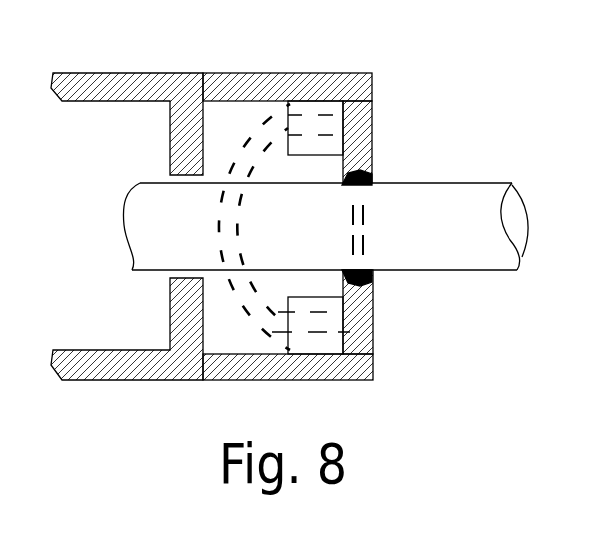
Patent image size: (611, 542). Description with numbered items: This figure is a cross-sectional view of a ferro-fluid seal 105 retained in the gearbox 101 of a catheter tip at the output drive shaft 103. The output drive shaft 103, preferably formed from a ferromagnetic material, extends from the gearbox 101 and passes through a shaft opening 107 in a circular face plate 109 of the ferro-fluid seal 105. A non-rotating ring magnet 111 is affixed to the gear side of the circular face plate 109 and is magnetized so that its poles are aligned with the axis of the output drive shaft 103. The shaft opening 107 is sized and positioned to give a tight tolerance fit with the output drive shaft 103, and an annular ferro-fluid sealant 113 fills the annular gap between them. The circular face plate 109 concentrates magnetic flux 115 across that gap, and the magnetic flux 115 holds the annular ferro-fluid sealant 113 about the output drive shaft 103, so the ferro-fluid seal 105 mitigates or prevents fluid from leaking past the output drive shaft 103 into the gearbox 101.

The gearbox 101 is at (118, 73).
The output drive shaft 103 is at (488, 185).
The ferro-fluid seal 105 is at (300, 73).
The shaft opening 107 is at (375, 177).
The circular face plate 109 is at (373, 333).
The ring magnet 111 is at (328, 297).
The annular ferro-fluid sealant 113 is at (357, 178).
The magnetic flux 115 is at (316, 337).